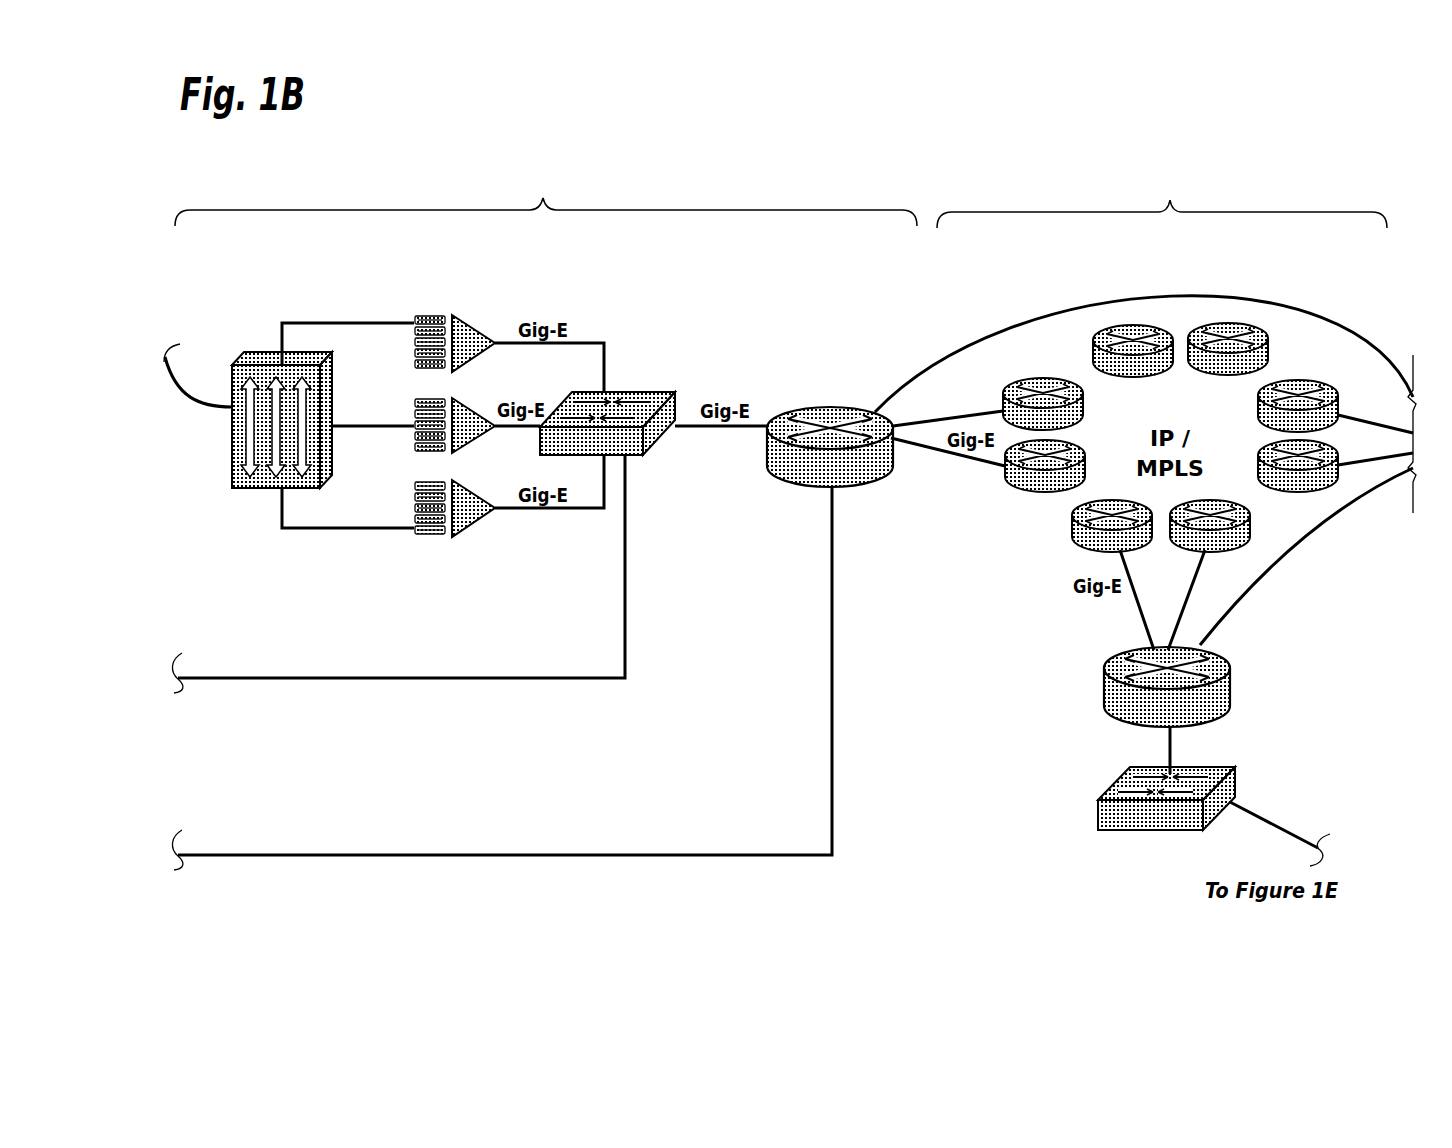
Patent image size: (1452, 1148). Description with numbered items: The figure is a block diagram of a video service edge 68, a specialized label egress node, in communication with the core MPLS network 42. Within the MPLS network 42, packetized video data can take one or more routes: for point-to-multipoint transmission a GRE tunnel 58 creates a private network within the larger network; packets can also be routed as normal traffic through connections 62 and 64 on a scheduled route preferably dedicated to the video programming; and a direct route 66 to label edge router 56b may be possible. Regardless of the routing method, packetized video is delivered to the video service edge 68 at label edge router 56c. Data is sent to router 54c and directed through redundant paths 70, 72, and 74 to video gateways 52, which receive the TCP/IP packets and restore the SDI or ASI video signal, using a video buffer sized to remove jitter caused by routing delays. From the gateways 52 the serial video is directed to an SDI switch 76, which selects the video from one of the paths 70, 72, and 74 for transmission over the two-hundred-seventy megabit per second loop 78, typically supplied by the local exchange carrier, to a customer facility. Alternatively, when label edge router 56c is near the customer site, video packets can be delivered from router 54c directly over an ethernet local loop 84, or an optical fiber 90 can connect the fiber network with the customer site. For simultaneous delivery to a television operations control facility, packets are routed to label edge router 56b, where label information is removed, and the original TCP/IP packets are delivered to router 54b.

The MPLS network 42 is at (1028, 204).
The video service edge 68 is at (687, 201).
The redundant path 70 is at (298, 323).
The redundant path 72 is at (338, 429).
The redundant path 74 is at (318, 532).
The SDI switch 76 is at (265, 350).
The 270 Mbps loop 78 is at (214, 409).
The video gateway 52 is at (469, 316).
The router 54c is at (638, 392).
The label edge router 56c is at (827, 405).
The GRE tunnel 58 is at (1350, 338).
The connection 62 is at (1385, 423).
The connection 64 is at (1353, 468).
The direct route 66 is at (1283, 560).
The label edge router 56b is at (1232, 663).
The router 54b is at (1237, 767).
The ethernet local loop 84 is at (626, 574).
The optical fiber 90 is at (835, 648).